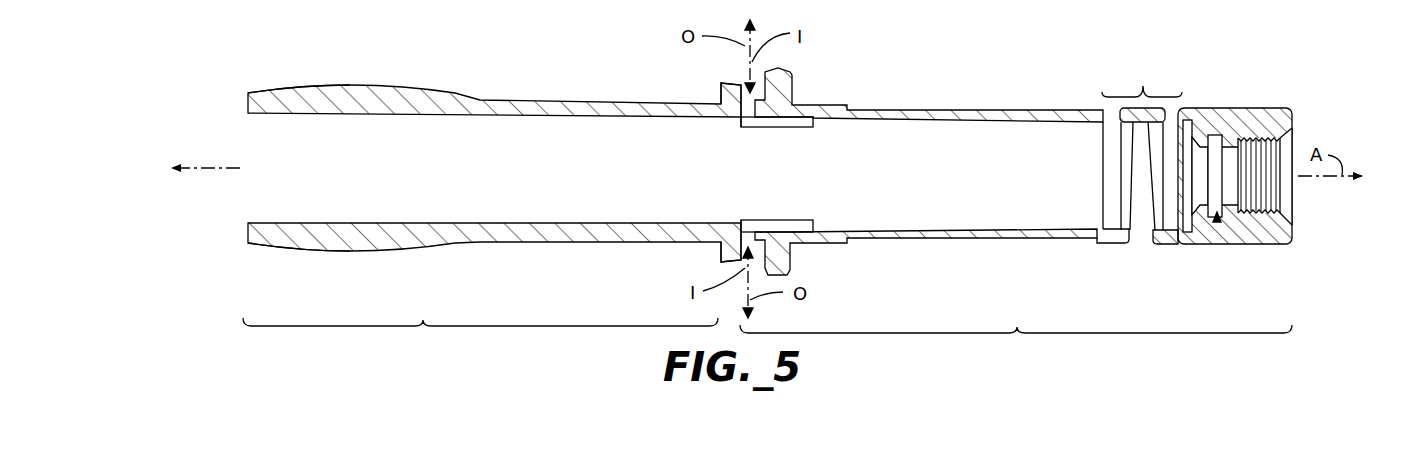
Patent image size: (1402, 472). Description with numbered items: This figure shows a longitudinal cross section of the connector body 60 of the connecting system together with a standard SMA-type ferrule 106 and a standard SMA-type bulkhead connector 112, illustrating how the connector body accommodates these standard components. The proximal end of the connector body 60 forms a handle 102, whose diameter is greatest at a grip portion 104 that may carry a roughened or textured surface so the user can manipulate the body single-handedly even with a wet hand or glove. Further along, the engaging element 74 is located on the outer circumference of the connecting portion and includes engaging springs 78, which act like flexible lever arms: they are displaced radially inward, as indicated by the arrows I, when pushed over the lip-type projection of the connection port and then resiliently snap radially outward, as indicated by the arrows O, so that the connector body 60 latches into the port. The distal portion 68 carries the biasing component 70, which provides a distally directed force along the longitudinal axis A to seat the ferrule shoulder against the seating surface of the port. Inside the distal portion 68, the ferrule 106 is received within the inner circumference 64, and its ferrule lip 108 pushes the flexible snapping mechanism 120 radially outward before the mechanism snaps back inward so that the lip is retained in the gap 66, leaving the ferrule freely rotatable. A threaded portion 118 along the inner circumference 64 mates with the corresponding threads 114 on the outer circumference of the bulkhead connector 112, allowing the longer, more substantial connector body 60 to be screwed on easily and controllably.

The connector body 60 is at (510, 76).
The inner circumference 64 is at (1210, 190).
The gap 66 is at (1218, 178).
The distal portion 68 is at (1037, 200).
The biasing component 70 is at (1139, 154).
The engaging element 74 is at (792, 82).
The engaging springs 78 is at (786, 70).
The handle 102 is at (492, 199).
The grip portion 104 is at (371, 243).
The SMA 905 ferrule 106 is at (1233, 153).
The ferrule lip 108 is at (1217, 222).
The SMA 905 bulkhead connector 112 is at (1288, 130).
The threads 114 is at (1258, 243).
The threaded portion 118 is at (1270, 140).
The flexible snapping mechanism 120 is at (1192, 150).